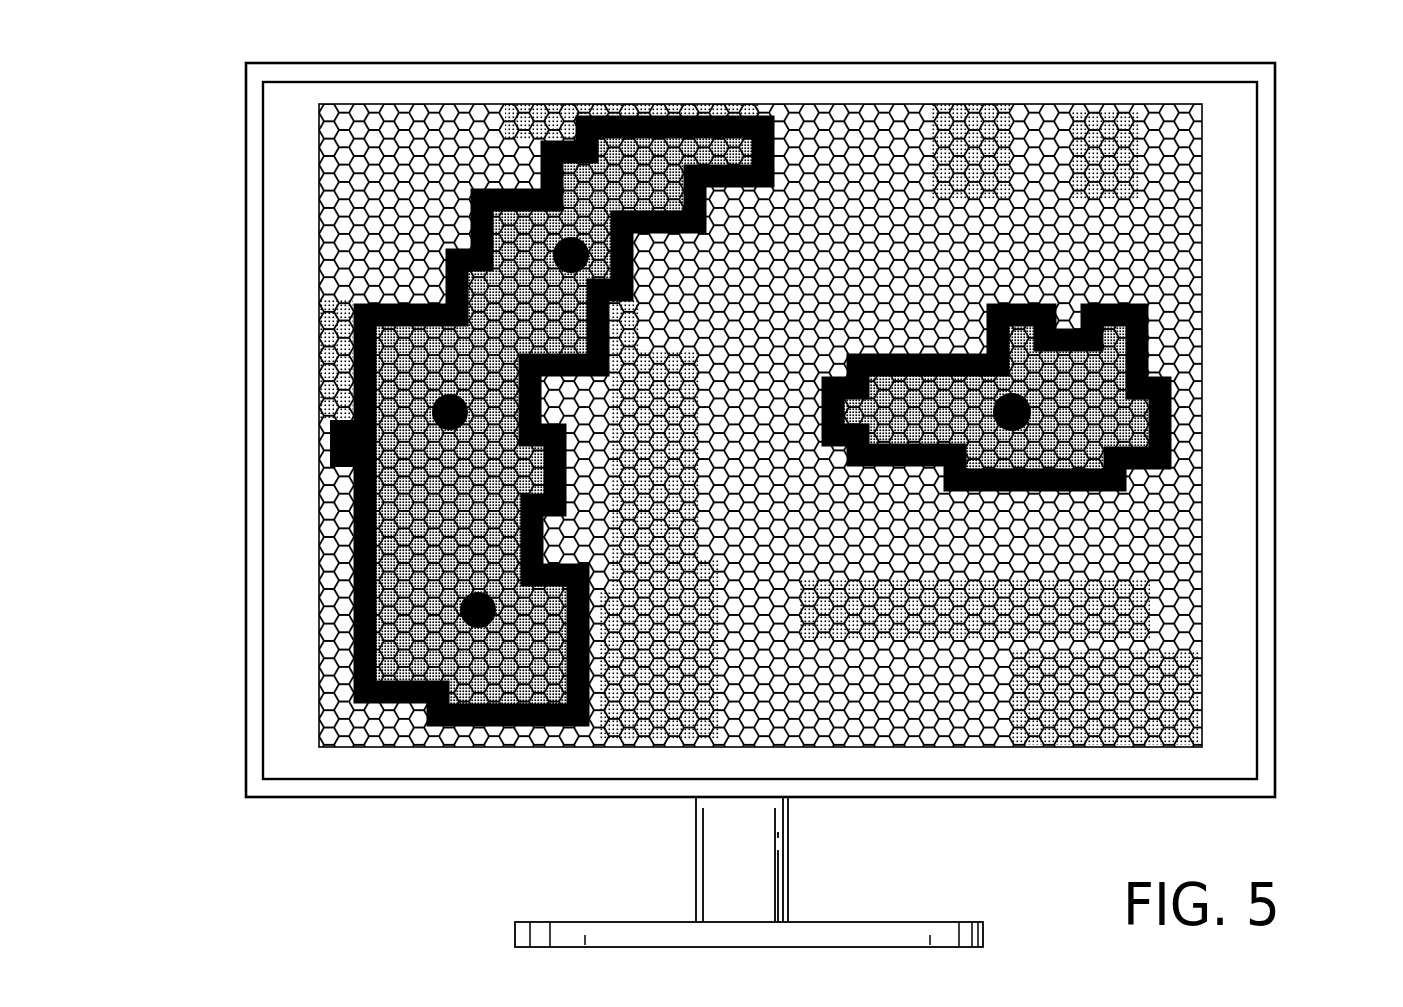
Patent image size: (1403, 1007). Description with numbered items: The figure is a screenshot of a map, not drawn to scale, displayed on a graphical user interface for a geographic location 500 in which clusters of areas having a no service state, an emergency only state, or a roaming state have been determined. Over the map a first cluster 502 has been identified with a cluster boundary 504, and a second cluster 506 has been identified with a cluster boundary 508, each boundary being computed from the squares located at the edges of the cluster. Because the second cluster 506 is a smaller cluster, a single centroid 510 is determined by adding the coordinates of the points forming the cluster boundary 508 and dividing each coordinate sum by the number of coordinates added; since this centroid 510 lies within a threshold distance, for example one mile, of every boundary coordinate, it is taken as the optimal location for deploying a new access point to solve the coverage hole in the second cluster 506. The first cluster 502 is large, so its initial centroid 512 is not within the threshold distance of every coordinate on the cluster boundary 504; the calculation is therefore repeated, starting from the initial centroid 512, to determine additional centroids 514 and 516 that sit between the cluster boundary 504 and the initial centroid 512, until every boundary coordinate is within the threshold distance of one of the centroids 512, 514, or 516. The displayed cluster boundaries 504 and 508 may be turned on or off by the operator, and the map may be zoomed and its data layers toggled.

The geographic location 500 is at (208, 116).
The first cluster 502 is at (641, 148).
The cluster boundary 504 is at (722, 112).
The second cluster 506 is at (1150, 420).
The cluster boundary 508 is at (1200, 388).
The centroid 510 is at (1013, 433).
The centroid 512 is at (430, 412).
The centroid 514 is at (557, 238).
The centroid 516 is at (480, 628).